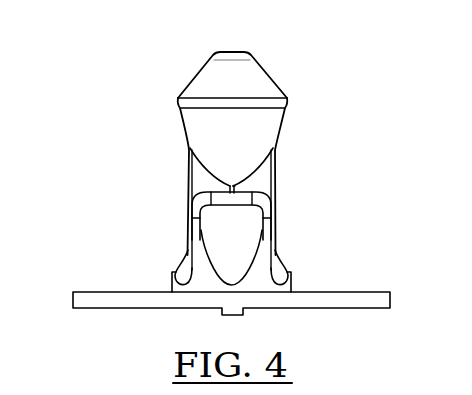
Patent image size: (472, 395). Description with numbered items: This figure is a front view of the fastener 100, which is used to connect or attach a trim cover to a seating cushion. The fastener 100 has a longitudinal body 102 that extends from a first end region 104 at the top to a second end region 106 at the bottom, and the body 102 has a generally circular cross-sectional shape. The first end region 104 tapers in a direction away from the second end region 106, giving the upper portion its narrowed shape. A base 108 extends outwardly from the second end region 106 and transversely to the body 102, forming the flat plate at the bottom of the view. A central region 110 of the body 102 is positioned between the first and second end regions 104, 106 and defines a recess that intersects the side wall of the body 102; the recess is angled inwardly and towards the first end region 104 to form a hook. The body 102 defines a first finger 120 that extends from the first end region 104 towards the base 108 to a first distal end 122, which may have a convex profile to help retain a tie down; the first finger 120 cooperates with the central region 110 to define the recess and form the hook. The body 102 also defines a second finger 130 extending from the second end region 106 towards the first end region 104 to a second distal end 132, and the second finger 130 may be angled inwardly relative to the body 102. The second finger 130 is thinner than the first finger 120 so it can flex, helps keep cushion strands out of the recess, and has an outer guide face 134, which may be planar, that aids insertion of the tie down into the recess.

The fastener 100 is at (113, 53).
The longitudinal body 102 is at (292, 147).
The first end region 104 is at (272, 78).
The second end region 106 is at (293, 272).
The base 108 is at (88, 298).
The central region 110 is at (291, 183).
The first finger 120 is at (228, 153).
The first distal end 122 is at (229, 186).
The second finger 130 is at (243, 242).
The second distal end 132 is at (235, 186).
The outer guide face 134 is at (222, 223).